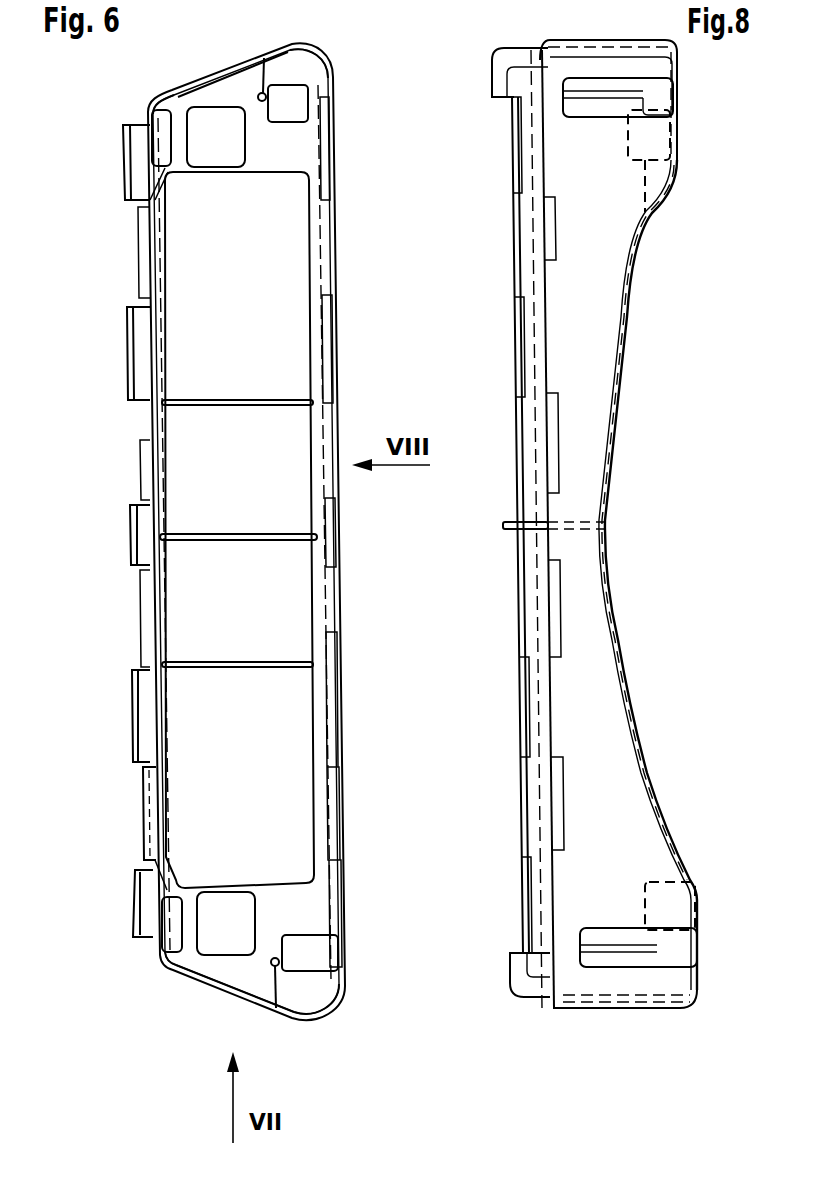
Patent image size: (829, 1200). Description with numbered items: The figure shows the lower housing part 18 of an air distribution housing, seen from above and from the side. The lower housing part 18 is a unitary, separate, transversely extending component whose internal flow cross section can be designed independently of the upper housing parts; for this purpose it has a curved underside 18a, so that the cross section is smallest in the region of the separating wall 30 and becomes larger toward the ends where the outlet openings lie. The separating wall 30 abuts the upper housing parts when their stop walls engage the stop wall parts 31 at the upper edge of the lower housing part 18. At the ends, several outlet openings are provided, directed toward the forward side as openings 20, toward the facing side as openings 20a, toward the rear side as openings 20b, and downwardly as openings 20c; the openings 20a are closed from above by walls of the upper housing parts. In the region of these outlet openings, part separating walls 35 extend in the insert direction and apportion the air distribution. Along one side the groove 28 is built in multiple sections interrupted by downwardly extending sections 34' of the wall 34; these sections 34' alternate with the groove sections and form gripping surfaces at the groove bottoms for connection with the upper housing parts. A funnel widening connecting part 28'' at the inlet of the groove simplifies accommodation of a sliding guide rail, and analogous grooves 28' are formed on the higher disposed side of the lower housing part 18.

In FIG. 6, the lower housing part 18 is at (298, 377).
In FIG. 8, the lower housing part 18 is at (603, 665).
In FIG. 8, the curved underside 18a is at (630, 400).
In FIG. 6, the outlet openings 20 is at (162, 118).
In FIG. 8, the outlet openings 20 is at (658, 132).
In FIG. 6, the outlet openings toward the facing side 20a is at (217, 70).
In FIG. 6, the outlet openings toward the rear side 20b is at (310, 950).
In FIG. 8, the outlet openings toward the rear side 20b is at (608, 87).
In FIG. 6, the downward outlet openings 20c is at (227, 903).
In FIG. 6, the groove 28 is at (115, 443).
In FIG. 6, the grooves 28' is at (356, 538).
In FIG. 6, the funnel widening connecting part 28'' is at (128, 814).
In FIG. 6, the separating wall 30 is at (247, 537).
In FIG. 8, the separating wall 30 is at (508, 527).
In FIG. 6, the stop wall parts 31 is at (303, 50).
In FIG. 6, the wall 34 is at (234, 421).
In FIG. 6, the downwardly extending sections 34' is at (121, 464).
In FIG. 6, the part separating walls 35 is at (272, 963).
In FIG. 8, the part separating walls 35 is at (522, 973).